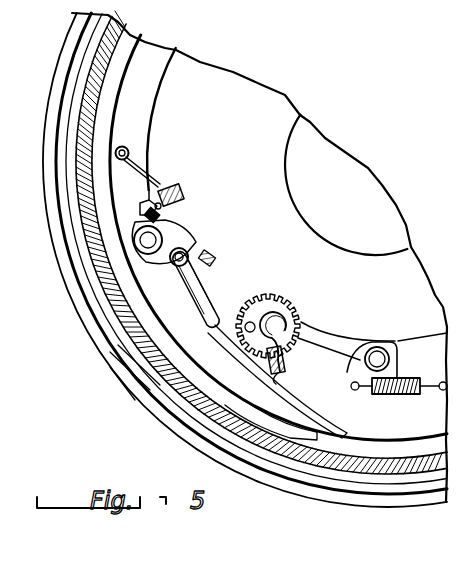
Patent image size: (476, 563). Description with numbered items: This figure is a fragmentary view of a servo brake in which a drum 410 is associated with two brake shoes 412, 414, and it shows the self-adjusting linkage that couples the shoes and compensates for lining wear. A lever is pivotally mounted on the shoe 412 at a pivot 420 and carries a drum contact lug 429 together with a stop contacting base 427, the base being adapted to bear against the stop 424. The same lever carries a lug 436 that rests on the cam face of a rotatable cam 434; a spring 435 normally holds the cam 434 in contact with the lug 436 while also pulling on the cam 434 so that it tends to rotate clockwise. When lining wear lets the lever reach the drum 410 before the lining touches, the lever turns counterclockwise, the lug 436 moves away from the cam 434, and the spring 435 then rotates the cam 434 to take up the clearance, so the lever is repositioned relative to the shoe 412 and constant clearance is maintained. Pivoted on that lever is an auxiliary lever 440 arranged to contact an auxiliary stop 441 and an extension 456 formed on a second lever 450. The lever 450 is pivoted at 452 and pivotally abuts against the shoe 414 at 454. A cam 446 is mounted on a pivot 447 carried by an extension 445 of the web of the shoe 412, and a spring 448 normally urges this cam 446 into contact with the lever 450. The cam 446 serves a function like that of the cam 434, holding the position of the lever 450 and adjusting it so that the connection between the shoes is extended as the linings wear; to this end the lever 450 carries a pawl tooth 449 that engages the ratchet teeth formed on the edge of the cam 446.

The drum 410 is at (105, 358).
The brake shoe 412 is at (137, 87).
The brake shoe 414 is at (427, 427).
The pivot pin 420 is at (125, 180).
The stop 424 is at (183, 191).
The stop contacting base 427 is at (157, 180).
The drum contact lug 429 is at (112, 212).
The rotatable cam 434 is at (125, 256).
The spring 435 is at (140, 252).
The lug 436 is at (165, 214).
The auxiliary lever 440 is at (211, 280).
The auxiliary stop 441 is at (210, 252).
The extension 445 is at (313, 337).
The cam 446 is at (272, 305).
The pivot 447 is at (273, 323).
The spring 448 is at (193, 447).
The pawl tooth 449 is at (172, 427).
The lever 450 is at (353, 367).
The pivot 452 is at (443, 310).
The abutment 454 is at (397, 352).
The extension 456 is at (165, 402).